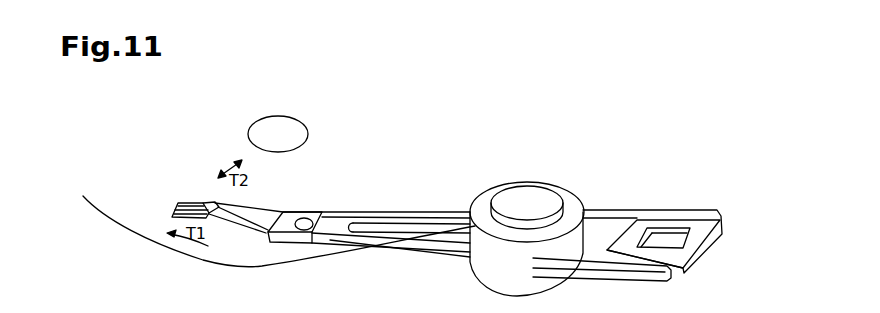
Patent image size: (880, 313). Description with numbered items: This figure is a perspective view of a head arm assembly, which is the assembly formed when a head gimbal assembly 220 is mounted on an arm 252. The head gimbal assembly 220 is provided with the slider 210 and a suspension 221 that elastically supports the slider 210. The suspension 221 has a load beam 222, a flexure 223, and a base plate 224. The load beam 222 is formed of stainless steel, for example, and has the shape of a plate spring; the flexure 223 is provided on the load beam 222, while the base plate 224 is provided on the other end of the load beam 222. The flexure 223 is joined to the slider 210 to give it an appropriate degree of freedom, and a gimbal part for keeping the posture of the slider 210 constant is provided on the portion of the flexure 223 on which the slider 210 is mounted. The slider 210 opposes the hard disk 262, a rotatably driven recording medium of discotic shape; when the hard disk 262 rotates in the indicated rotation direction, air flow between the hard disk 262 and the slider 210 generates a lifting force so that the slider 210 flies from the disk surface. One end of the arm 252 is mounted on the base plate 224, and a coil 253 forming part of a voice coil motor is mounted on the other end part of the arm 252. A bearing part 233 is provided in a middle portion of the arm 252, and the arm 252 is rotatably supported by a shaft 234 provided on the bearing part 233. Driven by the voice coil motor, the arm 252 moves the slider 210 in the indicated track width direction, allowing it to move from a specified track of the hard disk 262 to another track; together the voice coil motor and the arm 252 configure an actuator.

The slider 210 is at (200, 203).
The head gimbal assembly 220 is at (261, 243).
The suspension 221 is at (263, 193).
The load beam 222 is at (278, 212).
The flexure 223 is at (176, 204).
The base plate 224 is at (330, 211).
The bearing part 233 is at (472, 200).
The shaft 234 is at (537, 196).
The arm 252 is at (382, 248).
The coil 253 is at (707, 258).
The hard disk 262 is at (206, 264).